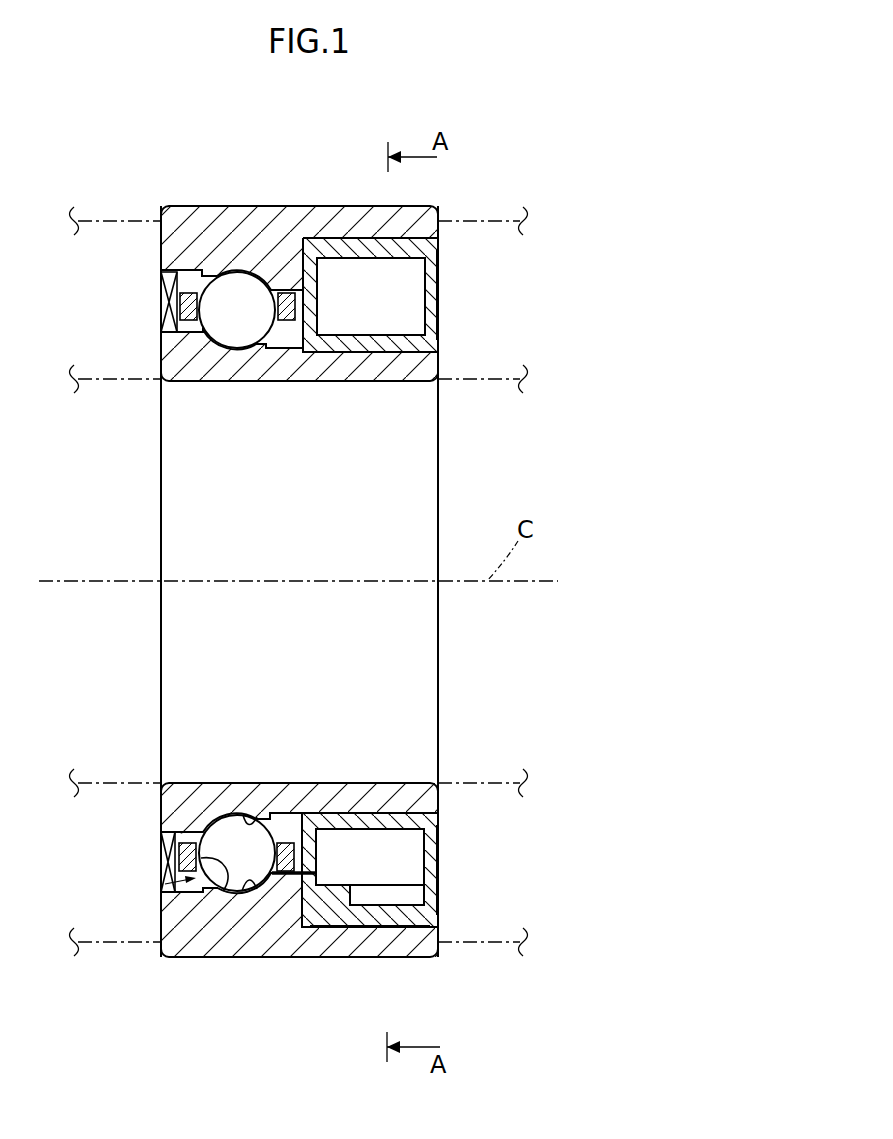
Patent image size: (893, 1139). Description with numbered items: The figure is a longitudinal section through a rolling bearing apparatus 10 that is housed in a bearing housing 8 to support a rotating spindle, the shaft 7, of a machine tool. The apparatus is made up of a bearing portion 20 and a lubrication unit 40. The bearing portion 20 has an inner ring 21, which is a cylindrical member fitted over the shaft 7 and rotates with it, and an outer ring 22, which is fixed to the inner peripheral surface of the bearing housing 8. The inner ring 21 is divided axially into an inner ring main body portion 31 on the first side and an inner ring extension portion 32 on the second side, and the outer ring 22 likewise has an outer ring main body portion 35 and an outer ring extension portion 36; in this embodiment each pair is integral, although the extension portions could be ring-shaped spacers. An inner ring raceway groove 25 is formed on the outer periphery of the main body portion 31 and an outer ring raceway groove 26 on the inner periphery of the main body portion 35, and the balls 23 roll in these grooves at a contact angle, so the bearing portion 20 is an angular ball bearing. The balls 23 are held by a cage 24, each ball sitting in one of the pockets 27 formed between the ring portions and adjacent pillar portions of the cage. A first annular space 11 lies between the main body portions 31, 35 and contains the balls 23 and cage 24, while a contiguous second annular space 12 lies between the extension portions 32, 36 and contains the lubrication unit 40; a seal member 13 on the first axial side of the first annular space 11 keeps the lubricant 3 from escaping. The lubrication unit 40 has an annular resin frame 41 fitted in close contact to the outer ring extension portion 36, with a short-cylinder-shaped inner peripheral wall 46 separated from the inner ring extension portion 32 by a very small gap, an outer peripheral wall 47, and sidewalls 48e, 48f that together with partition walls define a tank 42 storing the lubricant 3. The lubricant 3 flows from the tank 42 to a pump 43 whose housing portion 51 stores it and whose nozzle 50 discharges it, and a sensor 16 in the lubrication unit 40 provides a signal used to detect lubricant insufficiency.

The lubricant 3 is at (370, 571).
The shaft 7 is at (497, 379).
The bearing housing 8 is at (504, 228).
The rolling bearing apparatus 10 is at (311, 571).
The first annular space 11 is at (161, 893).
The second annular space 12 is at (438, 897).
The seal member 13 is at (161, 861).
The sensor 16 is at (329, 842).
The bearing portion 20 is at (272, 281).
The inner ring 21 is at (200, 362).
The outer ring 22 is at (185, 232).
The balls 23 is at (245, 330).
The cage 24 is at (188, 302).
The inner ring raceway groove 25 is at (250, 825).
The outer ring raceway groove 26 is at (257, 880).
The pockets 27 is at (227, 893).
The inner ring main body portion 31 is at (182, 795).
The inner ring extension portion 32 is at (377, 795).
The outer ring main body portion 35 is at (172, 943).
The outer ring extension portion 36 is at (378, 943).
The lubrication unit 40 is at (383, 250).
The frame 41 is at (430, 843).
The tank 42 is at (410, 318).
The pump 43 is at (332, 887).
The inner peripheral wall 46 is at (404, 867).
The outer peripheral wall 47 is at (410, 915).
The sidewall 48e is at (303, 270).
The sidewall 48f is at (430, 278).
The nozzle 50 is at (282, 875).
The housing portion 51 is at (350, 842).